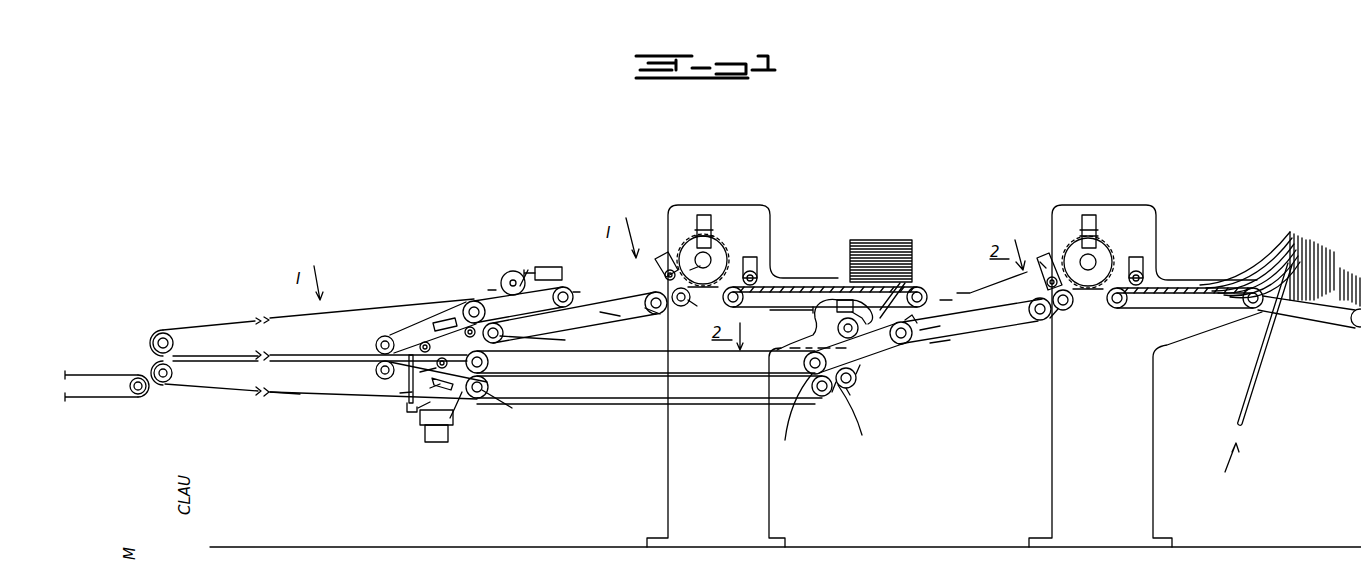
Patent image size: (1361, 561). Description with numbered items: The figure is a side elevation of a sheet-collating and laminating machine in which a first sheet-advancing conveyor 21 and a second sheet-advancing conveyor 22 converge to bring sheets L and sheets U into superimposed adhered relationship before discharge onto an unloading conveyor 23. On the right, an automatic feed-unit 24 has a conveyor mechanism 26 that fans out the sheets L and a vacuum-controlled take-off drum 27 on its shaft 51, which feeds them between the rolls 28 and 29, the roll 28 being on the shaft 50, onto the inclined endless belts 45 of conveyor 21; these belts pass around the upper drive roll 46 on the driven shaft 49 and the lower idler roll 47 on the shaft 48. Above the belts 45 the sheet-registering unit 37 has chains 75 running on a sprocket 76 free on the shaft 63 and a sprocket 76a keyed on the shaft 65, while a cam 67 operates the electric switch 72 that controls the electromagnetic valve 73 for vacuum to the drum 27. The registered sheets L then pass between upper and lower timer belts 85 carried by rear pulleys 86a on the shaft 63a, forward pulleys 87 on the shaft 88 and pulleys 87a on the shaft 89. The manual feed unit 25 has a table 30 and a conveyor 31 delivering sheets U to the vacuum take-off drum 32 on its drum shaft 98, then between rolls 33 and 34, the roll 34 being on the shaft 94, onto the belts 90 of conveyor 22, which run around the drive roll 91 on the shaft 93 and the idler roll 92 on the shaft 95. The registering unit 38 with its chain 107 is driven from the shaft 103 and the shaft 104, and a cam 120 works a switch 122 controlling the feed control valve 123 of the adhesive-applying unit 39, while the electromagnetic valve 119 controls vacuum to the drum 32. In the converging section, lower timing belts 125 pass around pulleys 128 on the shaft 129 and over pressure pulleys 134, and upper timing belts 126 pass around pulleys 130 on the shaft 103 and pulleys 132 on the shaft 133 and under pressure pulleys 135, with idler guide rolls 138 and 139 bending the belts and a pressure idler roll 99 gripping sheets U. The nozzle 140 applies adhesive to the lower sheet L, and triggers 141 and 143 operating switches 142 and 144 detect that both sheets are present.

The first sheet-advancing conveyor 21 is at (990, 294).
The second sheet-advancing conveyor 22 is at (594, 293).
The unloading conveyor 23 is at (100, 354).
The automatic feed-unit 24 is at (1106, 200).
The manual feed unit 25 is at (740, 206).
The conveyor mechanism 26 is at (1178, 320).
The vacuum-controlled take-off drum 27 is at (1145, 255).
The roll 28 is at (1063, 312).
The roll 29 is at (1050, 268).
The table 30 is at (773, 292).
The conveyor 31 is at (800, 286).
The vacuum take-off drum 32 is at (680, 248).
The roll 33 is at (664, 274).
The roll 34 is at (681, 307).
The sheet-registering unit 37 is at (930, 343).
The sheet-registering unit 38 is at (495, 280).
The adhesive-applying unit 39 is at (388, 408).
The endless belts 45 is at (940, 350).
The upper and rear drive roll 46 is at (1038, 321).
The lower idler roll 47 is at (850, 392).
The transverse shaft 48 is at (856, 380).
The transverse driven shaft 49 is at (1046, 284).
The shaft 50 is at (1073, 306).
The shaft 51 is at (1100, 255).
The transverse shaft 63 is at (792, 418).
The shaft 63a is at (857, 423).
The transverse shaft 65 is at (903, 345).
The cam 67 is at (822, 300).
The electric switch 72 is at (845, 300).
The electromagnetic valve 73 is at (1083, 216).
The sprocket chains 75 is at (905, 290).
The sprocket 76 is at (803, 372).
The sprocket 76a is at (915, 320).
The timer belts 85 is at (632, 372).
The rear drive pulleys 86a is at (816, 396).
The forward driven pulleys 87 is at (478, 398).
The forward driven pulleys 87a is at (490, 392).
The transverse shaft 88 is at (489, 362).
The transverse shaft 89 is at (486, 400).
The endless belts 90 is at (612, 316).
The upper and rear drive roll 91 is at (648, 300).
The lower idler roll 92 is at (558, 340).
The transverse shaft 93 is at (656, 316).
The shaft 94 is at (685, 304).
The transverse shaft 95 is at (450, 355).
The drum shaft 98 is at (702, 262).
The sheet guide bar / pressure idler roll 99 is at (425, 341).
The driven shaft 103 is at (450, 316).
The shaft 104 is at (568, 287).
The chain 107 is at (530, 268).
The electromagnetic valve 119 is at (700, 214).
The second cam 120 is at (515, 270).
The electric switch 122 is at (550, 266).
The electromagnetic feed control valve 123 is at (409, 412).
The lower timing belts 125 is at (288, 397).
The upper timing belts 126 is at (238, 318).
The forward driven pulleys 128 is at (175, 378).
The transverse shaft 129 is at (162, 384).
The driven pulleys 130 is at (476, 300).
The forward driving pulleys 132 is at (176, 333).
The transverse shaft 133 is at (156, 333).
The driven pressure pulleys 134 is at (376, 371).
The driven pressure pulleys 135 is at (376, 342).
The idler guide roll 138 is at (445, 390).
The idler guide roll 139 is at (440, 426).
The nozzle 140 is at (406, 396).
The detecting finger or trigger 141 is at (418, 412).
The normally-open electric switch 142 is at (452, 420).
The trigger 143 is at (428, 366).
The normally-open switch 144 is at (438, 382).
The sheet U is at (886, 240).
The sheet L is at (1352, 238).